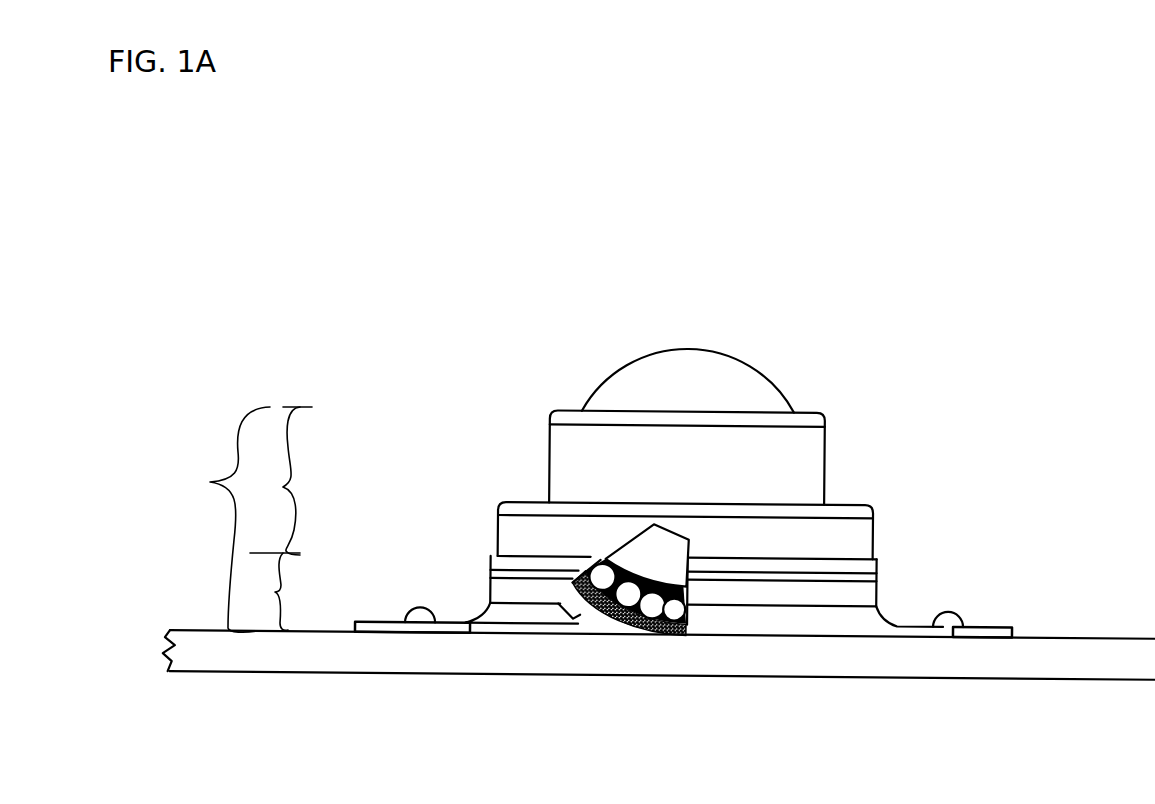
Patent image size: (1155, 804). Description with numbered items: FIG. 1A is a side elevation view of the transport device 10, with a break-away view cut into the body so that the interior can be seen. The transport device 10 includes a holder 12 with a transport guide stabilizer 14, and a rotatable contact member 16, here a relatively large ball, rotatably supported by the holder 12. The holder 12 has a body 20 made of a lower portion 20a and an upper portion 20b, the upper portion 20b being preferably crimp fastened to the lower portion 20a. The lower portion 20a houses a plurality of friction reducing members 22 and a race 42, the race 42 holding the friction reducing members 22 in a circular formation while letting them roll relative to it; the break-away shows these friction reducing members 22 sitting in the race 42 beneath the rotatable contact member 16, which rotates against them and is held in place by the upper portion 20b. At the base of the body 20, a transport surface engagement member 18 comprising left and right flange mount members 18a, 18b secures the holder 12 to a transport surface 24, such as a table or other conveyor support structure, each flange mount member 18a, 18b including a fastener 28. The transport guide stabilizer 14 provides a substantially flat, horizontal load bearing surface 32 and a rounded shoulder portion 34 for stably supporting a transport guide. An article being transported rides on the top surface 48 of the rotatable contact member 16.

The transport device 10 is at (1004, 249).
The holder 12 is at (217, 519).
The transport guide stabilizer 14 is at (521, 498).
The rotatable contact member 16 is at (729, 349).
The transport surface engagement member 18 is at (385, 622).
The left flange mount member 18a is at (380, 620).
The right flange mount member 18b is at (985, 629).
The body 20 is at (418, 538).
The lower portion 20a is at (264, 591).
The upper portion 20b is at (281, 481).
The friction reducing members 22 is at (672, 612).
The transport surface 24 is at (333, 676).
The fastener 28 is at (418, 610).
The load bearing surface 32 is at (537, 500).
The rounded shoulder portion 34 is at (495, 506).
The race 42 is at (598, 594).
The top surface 48 is at (688, 346).